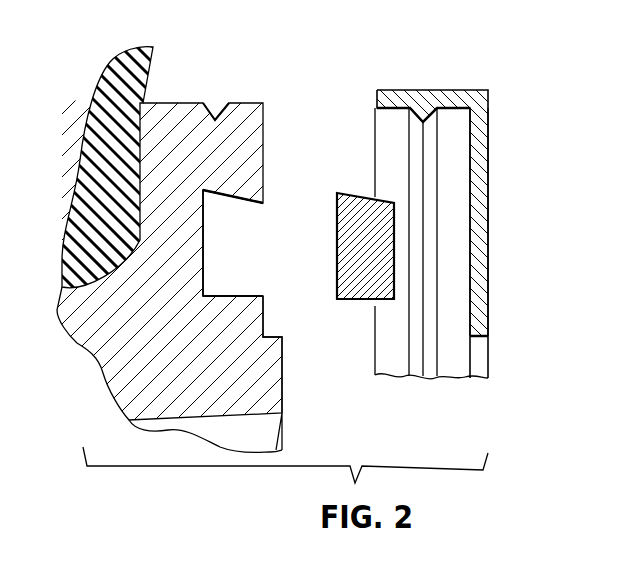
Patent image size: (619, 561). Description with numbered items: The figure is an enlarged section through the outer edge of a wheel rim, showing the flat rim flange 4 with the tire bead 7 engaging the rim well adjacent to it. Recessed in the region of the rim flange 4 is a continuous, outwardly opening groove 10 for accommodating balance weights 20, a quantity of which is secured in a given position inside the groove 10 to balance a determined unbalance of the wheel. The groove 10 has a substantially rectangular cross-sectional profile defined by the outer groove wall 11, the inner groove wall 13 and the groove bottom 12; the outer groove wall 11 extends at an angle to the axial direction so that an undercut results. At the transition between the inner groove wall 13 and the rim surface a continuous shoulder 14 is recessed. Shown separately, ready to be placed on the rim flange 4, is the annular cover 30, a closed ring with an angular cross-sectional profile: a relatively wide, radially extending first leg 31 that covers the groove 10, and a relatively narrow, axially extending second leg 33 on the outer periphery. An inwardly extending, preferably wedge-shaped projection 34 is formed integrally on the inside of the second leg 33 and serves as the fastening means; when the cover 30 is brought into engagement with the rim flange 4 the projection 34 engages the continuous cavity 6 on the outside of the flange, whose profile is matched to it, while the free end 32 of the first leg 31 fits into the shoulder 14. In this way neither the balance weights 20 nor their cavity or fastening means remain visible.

The rim flange 4 is at (176, 118).
The cavity 6 is at (216, 116).
The tire bead 7 is at (108, 218).
The groove 10 is at (244, 248).
The outer groove wall 11 is at (233, 200).
The groove bottom 12 is at (204, 267).
The inner groove wall 13 is at (247, 294).
The shoulder 14 is at (277, 336).
The balance weights 20 is at (374, 234).
The annular cover 30 is at (500, 142).
The first leg 31 is at (479, 172).
The free end 32 is at (477, 345).
The second leg 33 is at (460, 97).
The projection 34 is at (417, 121).